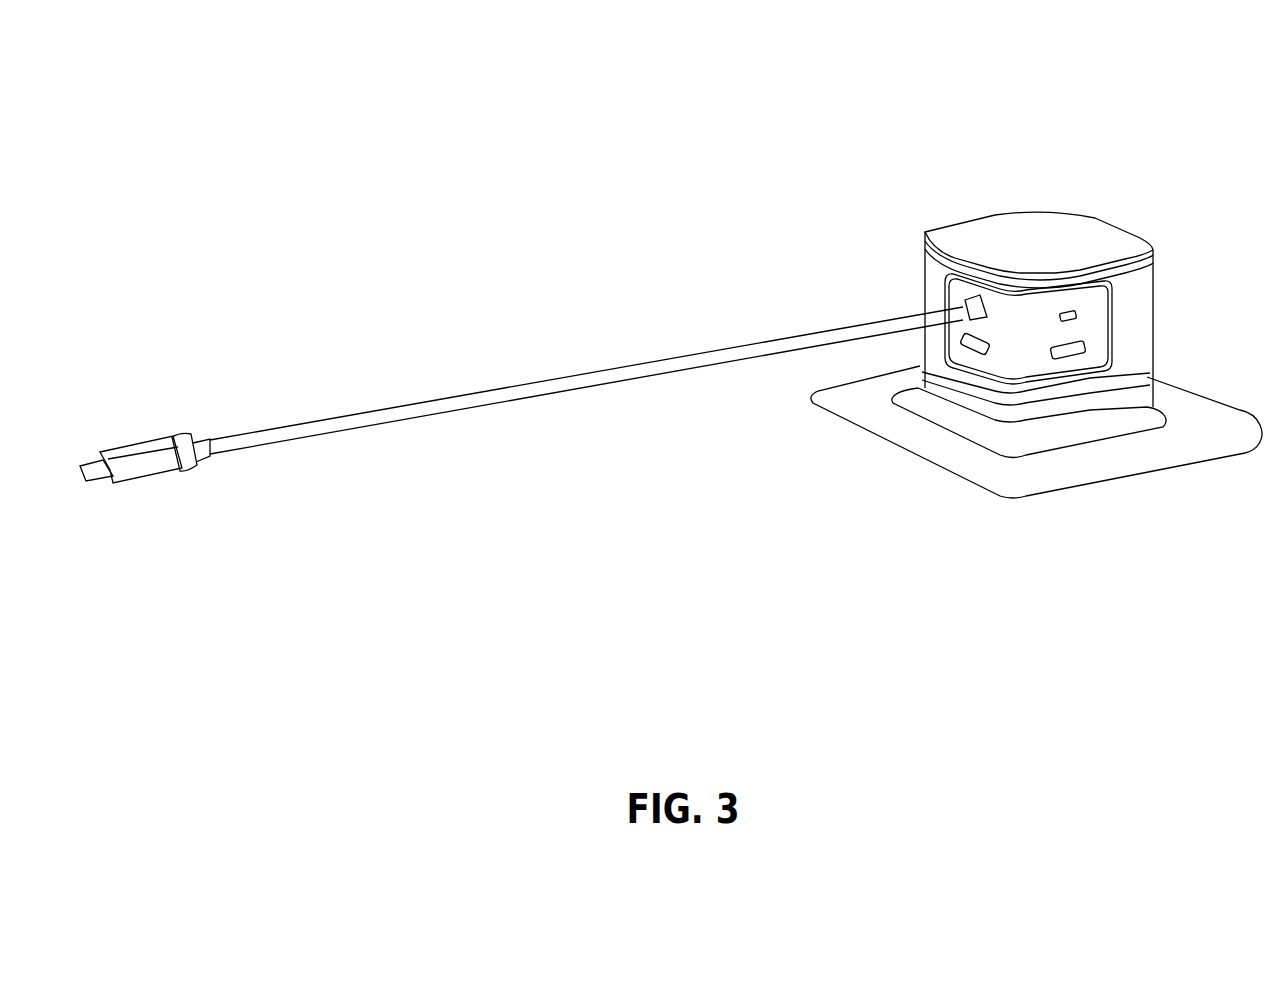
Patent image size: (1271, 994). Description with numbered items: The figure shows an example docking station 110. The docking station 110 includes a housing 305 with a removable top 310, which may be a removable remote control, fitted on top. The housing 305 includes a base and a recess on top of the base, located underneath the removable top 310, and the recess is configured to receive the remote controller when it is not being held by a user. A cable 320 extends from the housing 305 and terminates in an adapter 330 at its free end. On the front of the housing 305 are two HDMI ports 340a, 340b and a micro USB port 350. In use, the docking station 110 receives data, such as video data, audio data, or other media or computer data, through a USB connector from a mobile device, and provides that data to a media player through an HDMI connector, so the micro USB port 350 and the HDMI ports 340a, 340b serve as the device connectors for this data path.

The docking station 110 is at (1240, 70).
The housing 305 is at (937, 277).
The removable top 310 is at (1033, 232).
The cable 320 is at (427, 400).
The adapter 330 is at (157, 468).
The HDMI port 340a is at (976, 343).
The HDMI port 340b is at (1075, 353).
The micro USB port 350 is at (1073, 321).